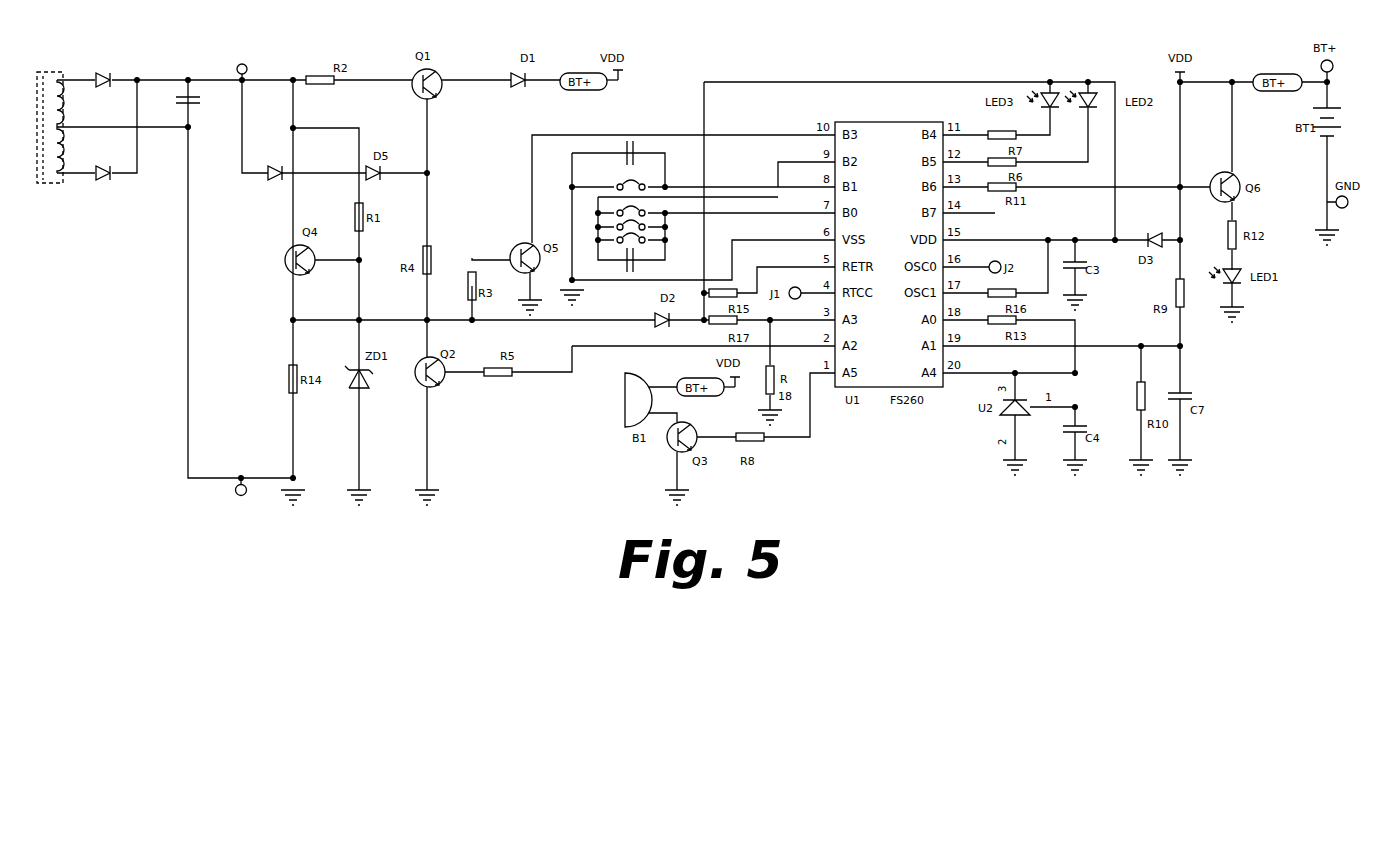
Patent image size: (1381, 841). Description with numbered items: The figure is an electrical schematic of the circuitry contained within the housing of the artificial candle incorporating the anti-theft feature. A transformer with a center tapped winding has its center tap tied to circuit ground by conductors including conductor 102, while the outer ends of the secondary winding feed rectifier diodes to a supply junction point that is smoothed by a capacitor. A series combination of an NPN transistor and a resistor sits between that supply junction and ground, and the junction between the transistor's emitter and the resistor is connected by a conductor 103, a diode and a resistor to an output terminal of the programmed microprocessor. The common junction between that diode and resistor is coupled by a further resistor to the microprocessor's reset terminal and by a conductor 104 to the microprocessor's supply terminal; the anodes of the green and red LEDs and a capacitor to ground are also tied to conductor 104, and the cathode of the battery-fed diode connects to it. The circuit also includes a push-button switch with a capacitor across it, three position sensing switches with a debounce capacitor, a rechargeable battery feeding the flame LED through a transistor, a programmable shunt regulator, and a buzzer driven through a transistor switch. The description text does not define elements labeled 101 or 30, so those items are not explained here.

The AC input rectifier circuit 101 is at (155, 128).
The conductor 102 is at (188, 243).
The conductor 103 is at (548, 322).
The conductor 104 is at (776, 82).
The switch input module 30 is at (642, 175).